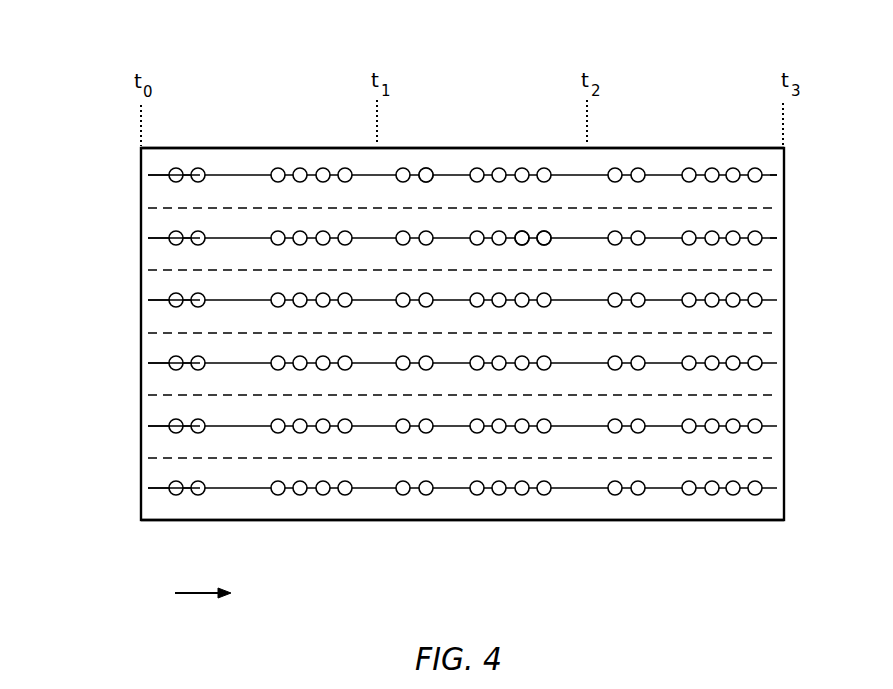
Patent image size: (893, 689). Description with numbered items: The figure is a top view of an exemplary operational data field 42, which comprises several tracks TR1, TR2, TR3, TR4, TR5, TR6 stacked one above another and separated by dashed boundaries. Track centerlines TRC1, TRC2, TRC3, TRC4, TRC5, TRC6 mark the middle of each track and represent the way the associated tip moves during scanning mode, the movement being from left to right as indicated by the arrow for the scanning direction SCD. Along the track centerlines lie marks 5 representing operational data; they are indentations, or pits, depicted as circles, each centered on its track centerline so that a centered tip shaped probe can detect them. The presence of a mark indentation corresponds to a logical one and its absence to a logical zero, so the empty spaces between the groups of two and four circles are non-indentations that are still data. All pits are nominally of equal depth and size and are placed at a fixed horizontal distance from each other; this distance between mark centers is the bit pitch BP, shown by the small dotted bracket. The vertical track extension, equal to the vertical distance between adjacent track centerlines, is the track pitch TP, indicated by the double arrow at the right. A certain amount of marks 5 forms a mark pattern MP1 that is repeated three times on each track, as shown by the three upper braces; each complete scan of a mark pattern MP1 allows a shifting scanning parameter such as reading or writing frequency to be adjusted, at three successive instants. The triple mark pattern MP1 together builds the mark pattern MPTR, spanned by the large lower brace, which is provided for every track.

The marks 5 is at (424, 180).
The operational data field 42 is at (784, 285).
The track centerline TRC1 is at (210, 175).
The track centerline TRC2 is at (210, 238).
The track centerline TRC3 is at (210, 300).
The track centerline TRC4 is at (210, 363).
The track centerline TRC5 is at (210, 426).
The track centerline TRC6 is at (210, 488).
The track TR1 is at (131, 178).
The track TR2 is at (131, 240).
The track TR3 is at (131, 303).
The track TR4 is at (131, 365).
The track TR5 is at (131, 428).
The track TR6 is at (131, 490).
The bit pitch BP is at (522, 231).
The track pitch TP is at (796, 175).
The mark pattern MP1 is at (372, 133).
The mark pattern MPTR is at (776, 533).
The scanning direction SCD is at (203, 610).